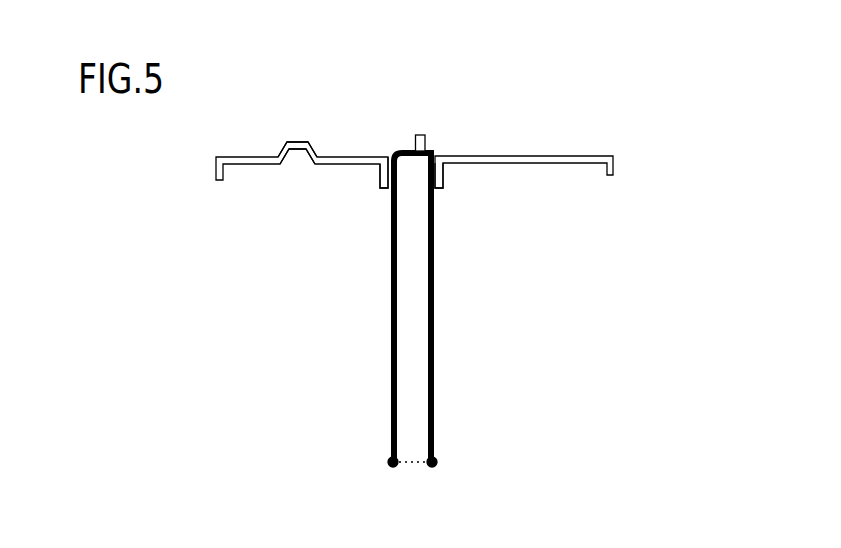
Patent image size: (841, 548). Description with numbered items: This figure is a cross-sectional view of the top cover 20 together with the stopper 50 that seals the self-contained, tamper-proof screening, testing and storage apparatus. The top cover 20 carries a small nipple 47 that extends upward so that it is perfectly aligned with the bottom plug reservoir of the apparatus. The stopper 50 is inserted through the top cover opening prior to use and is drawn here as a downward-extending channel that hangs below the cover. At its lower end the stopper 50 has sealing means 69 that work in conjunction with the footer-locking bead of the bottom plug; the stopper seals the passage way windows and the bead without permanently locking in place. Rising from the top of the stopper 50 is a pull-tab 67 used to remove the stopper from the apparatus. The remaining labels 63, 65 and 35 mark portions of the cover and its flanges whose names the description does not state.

The top cover 20 is at (585, 140).
The nipple 47 is at (275, 140).
The stopper 50 is at (445, 327).
The panel 63 is at (205, 173).
The panel flange 65 is at (385, 195).
The pull-tab 67 is at (431, 138).
The sealing means 69 is at (446, 453).
The roof 35 is at (101, 538).